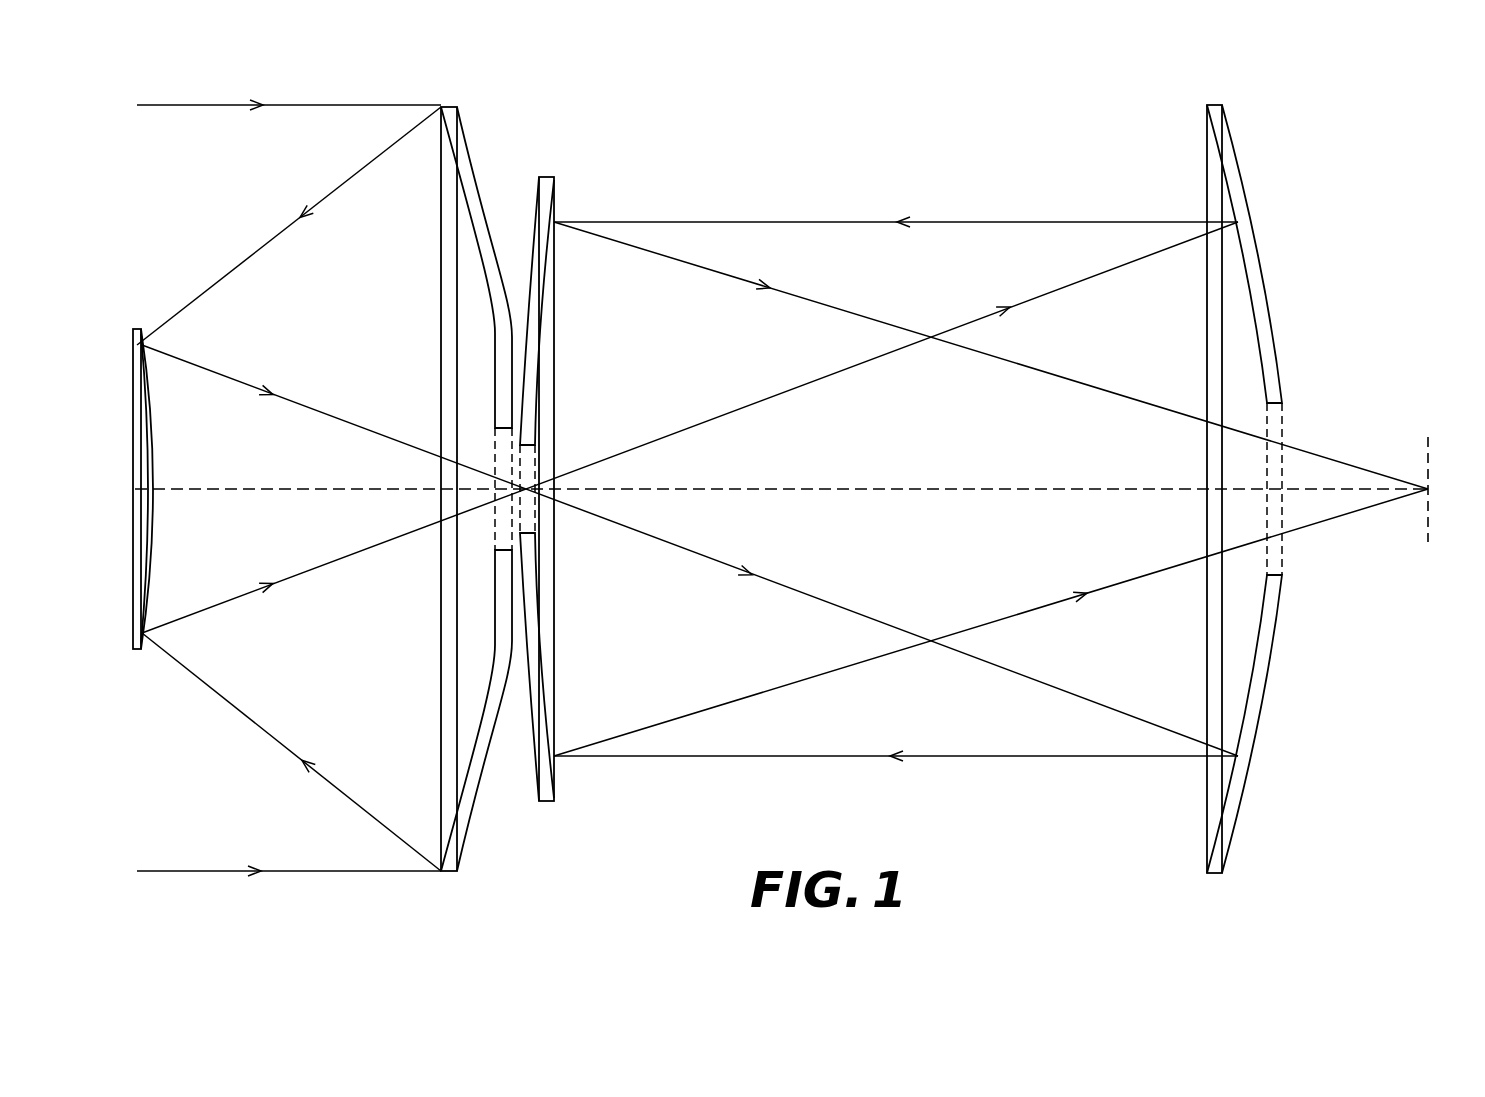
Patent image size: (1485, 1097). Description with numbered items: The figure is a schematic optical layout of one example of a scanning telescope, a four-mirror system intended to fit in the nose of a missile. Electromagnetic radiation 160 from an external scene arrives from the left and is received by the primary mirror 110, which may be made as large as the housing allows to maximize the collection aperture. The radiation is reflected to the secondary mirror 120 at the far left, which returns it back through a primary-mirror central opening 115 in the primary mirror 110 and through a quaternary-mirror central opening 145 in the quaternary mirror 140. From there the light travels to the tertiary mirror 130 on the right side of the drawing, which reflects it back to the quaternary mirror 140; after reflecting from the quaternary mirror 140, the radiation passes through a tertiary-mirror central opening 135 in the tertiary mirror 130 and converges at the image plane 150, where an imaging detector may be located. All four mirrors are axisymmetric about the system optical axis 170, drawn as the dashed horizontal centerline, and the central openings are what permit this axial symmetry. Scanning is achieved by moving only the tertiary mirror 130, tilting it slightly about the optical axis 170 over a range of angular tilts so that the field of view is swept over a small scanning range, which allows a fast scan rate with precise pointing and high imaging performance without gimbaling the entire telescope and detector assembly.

The primary mirror 110 is at (450, 485).
The primary-mirror central opening 115 is at (495, 449).
The secondary mirror 120 is at (150, 486).
The tertiary mirror 130 is at (1299, 478).
The tertiary-mirror central opening 135 is at (1285, 420).
The quaternary mirror 140 is at (566, 475).
The quaternary-mirror central opening 145 is at (525, 516).
The image plane 150 is at (1430, 478).
The electromagnetic radiation 160 is at (366, 882).
The optical axis 170 is at (862, 490).